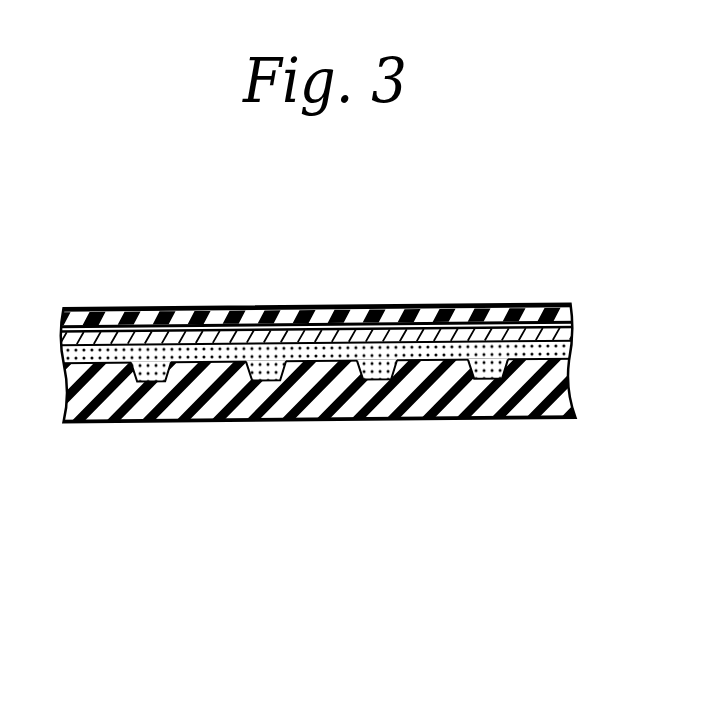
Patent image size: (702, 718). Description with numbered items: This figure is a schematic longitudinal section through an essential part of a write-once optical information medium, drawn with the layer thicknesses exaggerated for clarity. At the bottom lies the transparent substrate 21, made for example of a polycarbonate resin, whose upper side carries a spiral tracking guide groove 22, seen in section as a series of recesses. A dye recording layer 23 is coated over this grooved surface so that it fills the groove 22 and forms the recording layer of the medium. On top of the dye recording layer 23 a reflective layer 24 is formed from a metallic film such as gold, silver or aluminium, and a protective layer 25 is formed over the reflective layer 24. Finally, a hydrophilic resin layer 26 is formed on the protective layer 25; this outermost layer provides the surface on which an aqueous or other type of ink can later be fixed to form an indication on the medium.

The transparent substrate 21 is at (318, 402).
The spiral tracking guide groove 22 is at (372, 383).
The dye recording layer 23 is at (455, 350).
The reflective layer 24 is at (349, 331).
The protective layer 25 is at (148, 324).
The hydrophilic resin layer 26 is at (267, 307).